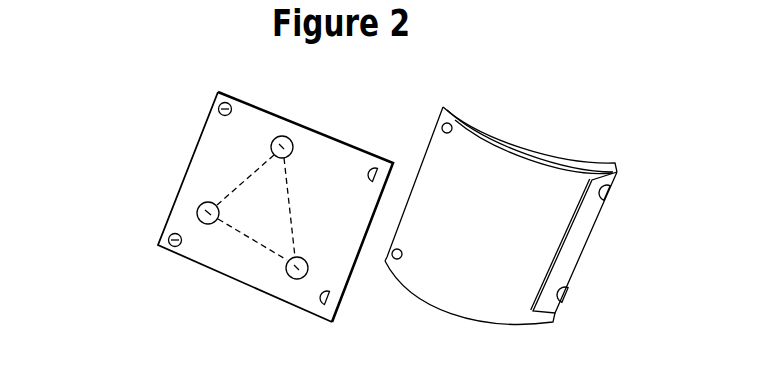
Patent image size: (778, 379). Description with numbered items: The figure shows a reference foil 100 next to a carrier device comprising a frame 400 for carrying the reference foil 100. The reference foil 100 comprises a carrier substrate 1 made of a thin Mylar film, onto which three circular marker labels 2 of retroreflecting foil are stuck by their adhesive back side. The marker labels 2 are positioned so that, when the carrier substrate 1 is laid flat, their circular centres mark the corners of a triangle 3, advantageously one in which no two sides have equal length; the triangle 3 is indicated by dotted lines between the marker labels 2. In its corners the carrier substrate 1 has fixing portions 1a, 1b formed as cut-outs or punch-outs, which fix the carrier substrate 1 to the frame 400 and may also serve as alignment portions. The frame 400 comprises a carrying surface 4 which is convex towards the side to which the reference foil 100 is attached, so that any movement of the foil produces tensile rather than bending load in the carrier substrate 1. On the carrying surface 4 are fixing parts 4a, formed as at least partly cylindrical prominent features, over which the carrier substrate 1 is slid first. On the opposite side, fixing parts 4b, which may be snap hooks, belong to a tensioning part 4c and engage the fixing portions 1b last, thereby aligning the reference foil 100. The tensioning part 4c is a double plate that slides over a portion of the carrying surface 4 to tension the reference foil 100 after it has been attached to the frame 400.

The reference foil 100 is at (172, 154).
The carrier substrate 1 is at (260, 273).
The fixing portion 1a is at (218, 106).
The fixing portion 1b is at (375, 168).
The marker label 2 is at (281, 135).
The triangle 3 is at (240, 236).
The frame 400 is at (592, 137).
The carrying surface 4 is at (513, 165).
The fixing part 4a is at (443, 124).
The fixing part 4b is at (572, 298).
The tensioning part 4c is at (578, 243).